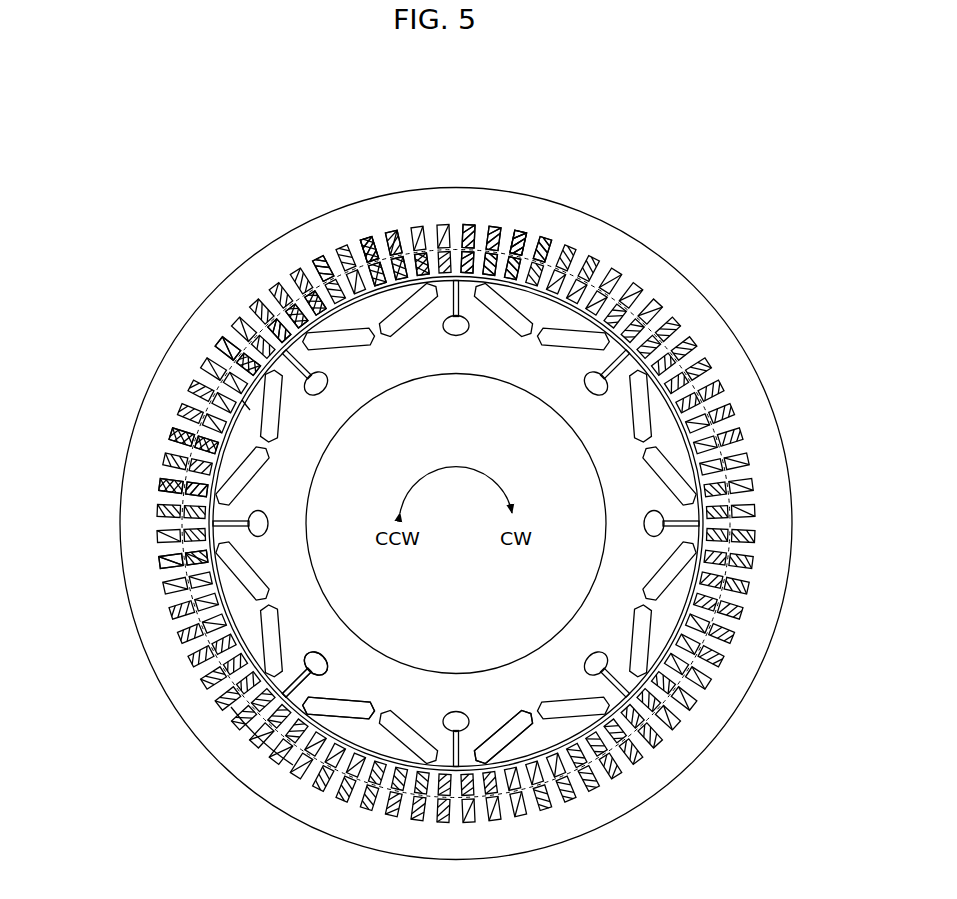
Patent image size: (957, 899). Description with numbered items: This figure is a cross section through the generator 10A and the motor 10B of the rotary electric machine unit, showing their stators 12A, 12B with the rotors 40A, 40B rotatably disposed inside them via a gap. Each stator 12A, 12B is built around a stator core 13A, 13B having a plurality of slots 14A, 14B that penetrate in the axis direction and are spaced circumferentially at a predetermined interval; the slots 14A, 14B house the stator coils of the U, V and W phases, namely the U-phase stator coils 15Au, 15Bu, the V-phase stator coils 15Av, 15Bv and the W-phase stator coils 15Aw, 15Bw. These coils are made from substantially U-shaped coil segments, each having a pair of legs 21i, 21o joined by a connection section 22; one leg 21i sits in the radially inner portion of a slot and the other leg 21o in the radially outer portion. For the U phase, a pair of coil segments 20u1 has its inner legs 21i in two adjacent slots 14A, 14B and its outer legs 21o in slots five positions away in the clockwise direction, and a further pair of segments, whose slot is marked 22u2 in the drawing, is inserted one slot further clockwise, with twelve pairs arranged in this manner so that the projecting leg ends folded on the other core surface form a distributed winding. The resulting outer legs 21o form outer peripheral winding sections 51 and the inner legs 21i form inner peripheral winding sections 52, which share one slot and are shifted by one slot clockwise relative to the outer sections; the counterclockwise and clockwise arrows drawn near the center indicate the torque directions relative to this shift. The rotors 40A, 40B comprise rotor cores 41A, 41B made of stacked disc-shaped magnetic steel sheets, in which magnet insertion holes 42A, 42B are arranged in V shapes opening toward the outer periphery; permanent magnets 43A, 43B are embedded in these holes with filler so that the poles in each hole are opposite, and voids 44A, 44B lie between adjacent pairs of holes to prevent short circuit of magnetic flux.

The generator 10A is at (456, 490).
The motor 10B is at (652, 175).
The stator 12A is at (452, 523).
The stator 12B is at (190, 733).
The stator core 13A is at (451, 572).
The stator core 13B is at (317, 817).
The slots 14A is at (236, 620).
The slots 14B is at (232, 703).
The U-phase stator coil 15Au is at (133, 387).
The U-phase stator coil 15Bu is at (162, 432).
The W-phase stator coil 15Aw is at (126, 434).
The W-phase stator coil 15Bw is at (152, 483).
The V-phase stator coil 15Av is at (128, 611).
The V-phase stator coil 15Bv is at (153, 565).
The pair of coil segments 20u1 is at (318, 292).
The leg 21o is at (393, 243).
The leg 21i is at (283, 343).
The connection section 22 is at (357, 252).
The U-phase slot 22u2 is at (482, 243).
The outer peripheral winding section 51 is at (247, 377).
The inner peripheral winding section 52 is at (215, 352).
The rotor 40A is at (378, 524).
The rotor 40B is at (213, 590).
The rotor core 41A is at (456, 524).
The rotor core 41B is at (345, 640).
The magnet insertion holes 42A is at (389, 675).
The magnet insertion holes 42B is at (355, 700).
The permanent magnets 43A is at (356, 630).
The permanent magnets 43B is at (305, 640).
The voids 44A is at (490, 696).
The voids 44B is at (483, 705).